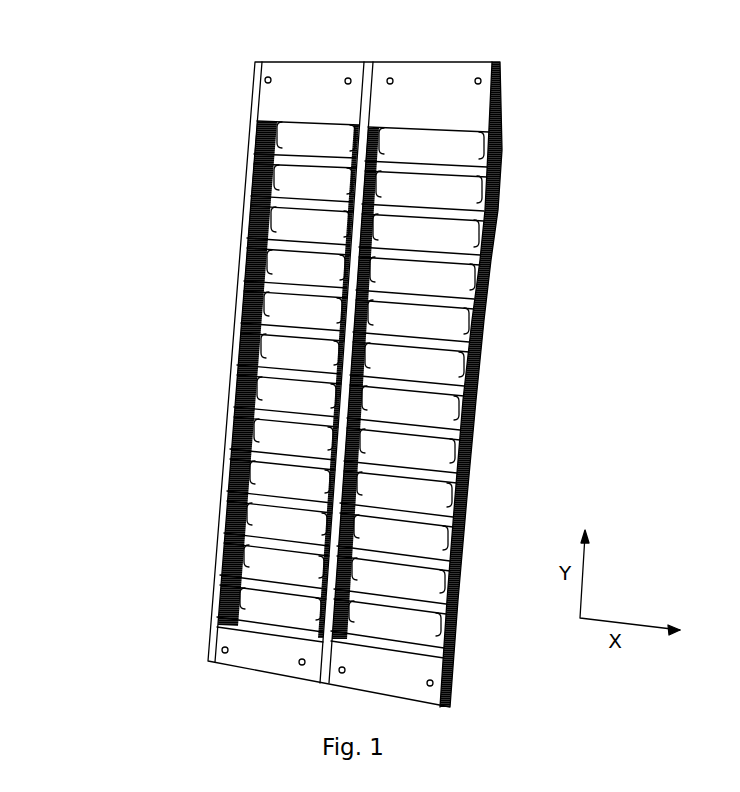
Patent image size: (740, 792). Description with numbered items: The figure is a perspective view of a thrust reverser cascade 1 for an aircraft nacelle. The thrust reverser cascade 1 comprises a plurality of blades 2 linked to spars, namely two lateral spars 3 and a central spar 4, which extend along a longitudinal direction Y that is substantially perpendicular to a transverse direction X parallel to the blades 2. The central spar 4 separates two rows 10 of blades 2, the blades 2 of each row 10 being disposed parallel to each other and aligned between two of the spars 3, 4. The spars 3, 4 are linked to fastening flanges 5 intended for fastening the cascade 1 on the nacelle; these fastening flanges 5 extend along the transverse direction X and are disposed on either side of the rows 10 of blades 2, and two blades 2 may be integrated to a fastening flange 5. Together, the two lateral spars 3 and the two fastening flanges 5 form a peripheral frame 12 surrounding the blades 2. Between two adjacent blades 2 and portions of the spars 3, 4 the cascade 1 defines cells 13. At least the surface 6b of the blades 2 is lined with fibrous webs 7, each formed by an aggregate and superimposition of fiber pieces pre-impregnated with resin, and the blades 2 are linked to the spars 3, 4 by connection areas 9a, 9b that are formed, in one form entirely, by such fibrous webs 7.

The thrust reverser cascade 1 is at (565, 195).
The blade 2 is at (457, 297).
The lateral spar 3 is at (228, 385).
The central spar 4 is at (342, 478).
The fastening flange 5 is at (268, 92).
The surface of the blade 6b is at (268, 320).
The fibrous web 7 is at (270, 283).
The connection area 9a is at (260, 166).
The connection area 9b is at (262, 157).
The row of blades 10 is at (291, 137).
The peripheral frame 12 is at (453, 657).
The cell 13 is at (452, 320).